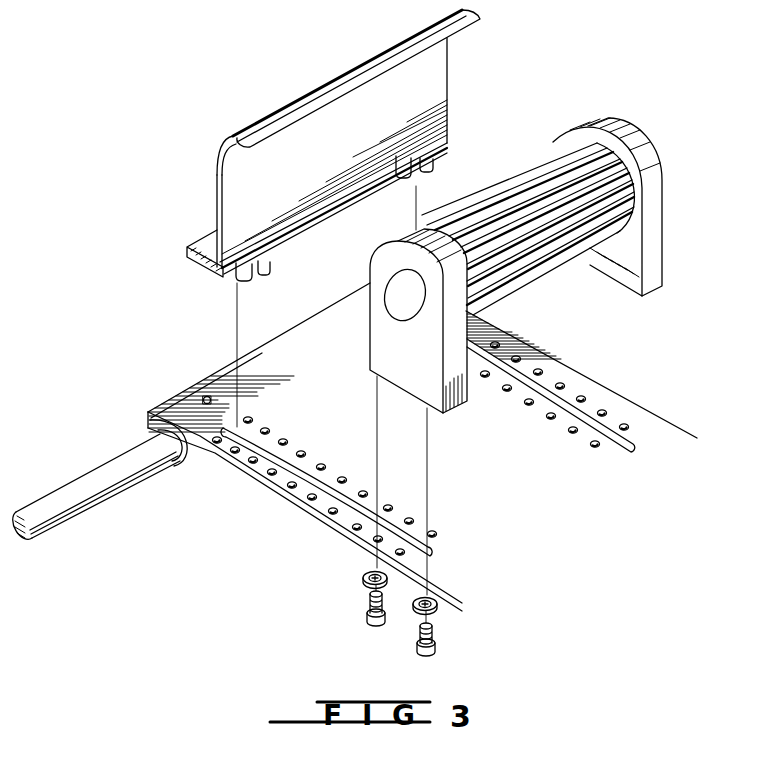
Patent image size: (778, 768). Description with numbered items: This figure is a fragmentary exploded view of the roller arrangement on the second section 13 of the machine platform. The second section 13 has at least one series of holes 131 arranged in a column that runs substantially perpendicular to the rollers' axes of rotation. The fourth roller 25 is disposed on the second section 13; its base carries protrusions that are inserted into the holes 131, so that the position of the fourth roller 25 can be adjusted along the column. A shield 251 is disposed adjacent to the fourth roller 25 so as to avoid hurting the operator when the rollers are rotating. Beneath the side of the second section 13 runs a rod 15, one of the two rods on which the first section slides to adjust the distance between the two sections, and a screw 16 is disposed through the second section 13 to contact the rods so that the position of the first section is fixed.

The second section 13 is at (666, 427).
The series of holes 131 is at (566, 414).
The rod 15 is at (110, 497).
The screw 16 is at (206, 397).
The fourth roller 25 is at (534, 180).
The shield 251 is at (437, 84).